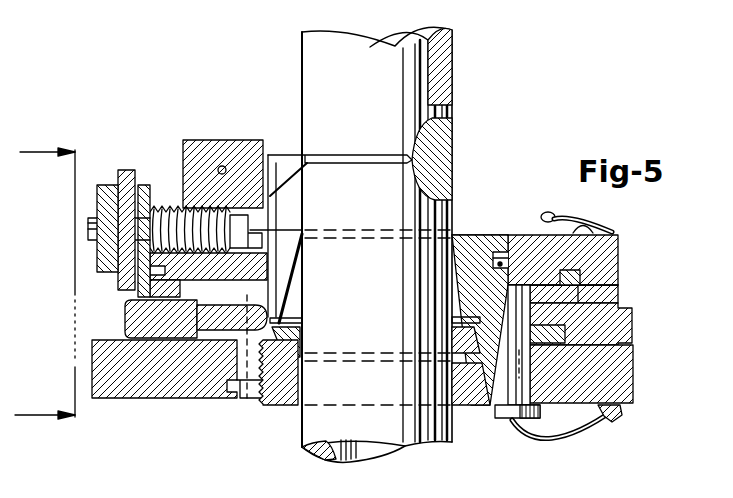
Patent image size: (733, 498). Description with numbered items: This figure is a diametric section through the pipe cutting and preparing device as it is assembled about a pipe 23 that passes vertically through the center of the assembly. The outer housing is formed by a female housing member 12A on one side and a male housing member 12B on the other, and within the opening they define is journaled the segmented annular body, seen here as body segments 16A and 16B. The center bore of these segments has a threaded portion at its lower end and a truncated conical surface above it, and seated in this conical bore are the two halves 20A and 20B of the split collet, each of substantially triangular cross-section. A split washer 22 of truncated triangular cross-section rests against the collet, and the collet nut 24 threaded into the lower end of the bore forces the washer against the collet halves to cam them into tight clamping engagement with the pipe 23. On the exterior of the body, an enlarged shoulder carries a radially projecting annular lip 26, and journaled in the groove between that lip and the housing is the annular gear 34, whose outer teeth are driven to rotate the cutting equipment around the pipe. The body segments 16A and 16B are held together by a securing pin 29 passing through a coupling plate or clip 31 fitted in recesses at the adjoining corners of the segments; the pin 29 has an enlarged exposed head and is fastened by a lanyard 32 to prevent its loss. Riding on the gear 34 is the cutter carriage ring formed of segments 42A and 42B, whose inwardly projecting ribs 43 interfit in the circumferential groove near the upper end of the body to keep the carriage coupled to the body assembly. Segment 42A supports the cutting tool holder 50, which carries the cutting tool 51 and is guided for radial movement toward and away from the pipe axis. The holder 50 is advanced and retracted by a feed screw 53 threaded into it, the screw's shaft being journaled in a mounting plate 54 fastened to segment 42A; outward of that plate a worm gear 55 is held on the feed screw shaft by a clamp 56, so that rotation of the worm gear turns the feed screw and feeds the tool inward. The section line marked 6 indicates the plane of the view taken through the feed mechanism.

The section line 6- 6 is at (45, 270).
The female housing member 12A is at (148, 398).
The male housing member 12B is at (635, 373).
The semi-circular annular body segment 16A is at (238, 386).
The semi-circular annular body segment 16B is at (480, 268).
The collet half 20A is at (302, 297).
The collet half 20B is at (455, 287).
The split washer 22 is at (300, 353).
The pipe 23 is at (452, 86).
The collet nut 24 is at (279, 405).
The annular lip 26 is at (612, 264).
The securing pin 29 is at (506, 426).
The coupling plate or clip 31 is at (250, 306).
The lanyard 32 is at (560, 210).
The annular gear 34 is at (632, 316).
The cutter carriage segment 42A is at (126, 312).
The cutter carriage segment 42B is at (620, 235).
The semi-circular rib 43 is at (506, 262).
The cutting tool holder 50 is at (213, 140).
The cutting tool 51 is at (272, 155).
The feed screw 53 is at (167, 207).
The mounting plate 54 is at (144, 185).
The worm gear 55 is at (127, 170).
The clamp 56 is at (107, 185).